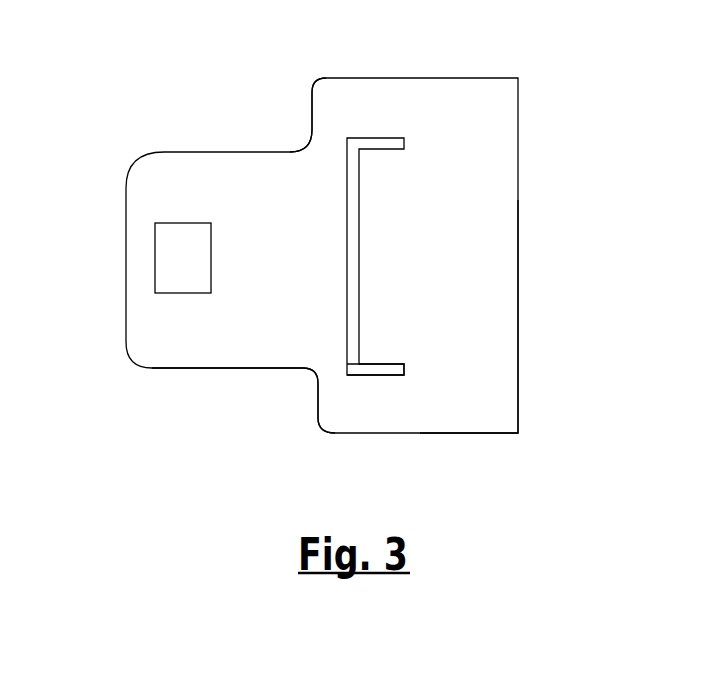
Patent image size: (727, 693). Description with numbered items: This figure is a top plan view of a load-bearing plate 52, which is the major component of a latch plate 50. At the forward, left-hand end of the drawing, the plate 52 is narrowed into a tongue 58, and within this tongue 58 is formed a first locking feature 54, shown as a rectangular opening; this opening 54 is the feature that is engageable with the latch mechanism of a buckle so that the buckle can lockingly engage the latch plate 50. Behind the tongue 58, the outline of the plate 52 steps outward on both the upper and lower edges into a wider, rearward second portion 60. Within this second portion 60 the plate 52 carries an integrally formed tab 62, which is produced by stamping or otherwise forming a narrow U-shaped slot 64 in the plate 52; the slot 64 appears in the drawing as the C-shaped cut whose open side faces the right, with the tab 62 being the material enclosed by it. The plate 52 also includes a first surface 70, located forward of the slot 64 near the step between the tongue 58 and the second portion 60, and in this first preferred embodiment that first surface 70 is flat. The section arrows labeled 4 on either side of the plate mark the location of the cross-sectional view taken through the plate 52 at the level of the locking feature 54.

The latch plate 50 is at (530, 335).
The load-bearing plate 52 is at (507, 413).
The first locking feature 54 is at (198, 292).
The tongue 58 is at (268, 340).
The second portion 60 is at (348, 421).
The tab 62 is at (368, 193).
The U-shaped slot 64 is at (369, 373).
The first surface 70 is at (330, 162).
The section line 4- 4 is at (73, 258).